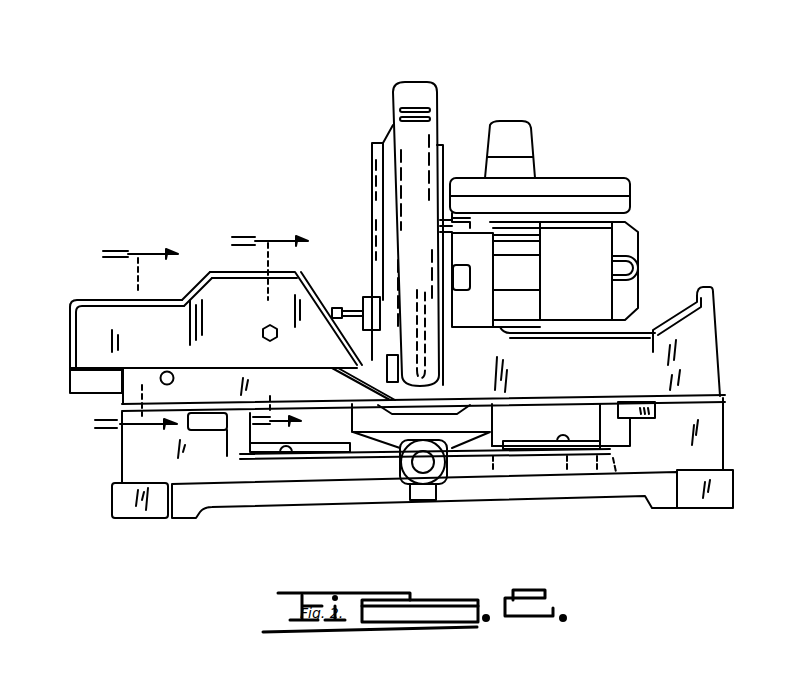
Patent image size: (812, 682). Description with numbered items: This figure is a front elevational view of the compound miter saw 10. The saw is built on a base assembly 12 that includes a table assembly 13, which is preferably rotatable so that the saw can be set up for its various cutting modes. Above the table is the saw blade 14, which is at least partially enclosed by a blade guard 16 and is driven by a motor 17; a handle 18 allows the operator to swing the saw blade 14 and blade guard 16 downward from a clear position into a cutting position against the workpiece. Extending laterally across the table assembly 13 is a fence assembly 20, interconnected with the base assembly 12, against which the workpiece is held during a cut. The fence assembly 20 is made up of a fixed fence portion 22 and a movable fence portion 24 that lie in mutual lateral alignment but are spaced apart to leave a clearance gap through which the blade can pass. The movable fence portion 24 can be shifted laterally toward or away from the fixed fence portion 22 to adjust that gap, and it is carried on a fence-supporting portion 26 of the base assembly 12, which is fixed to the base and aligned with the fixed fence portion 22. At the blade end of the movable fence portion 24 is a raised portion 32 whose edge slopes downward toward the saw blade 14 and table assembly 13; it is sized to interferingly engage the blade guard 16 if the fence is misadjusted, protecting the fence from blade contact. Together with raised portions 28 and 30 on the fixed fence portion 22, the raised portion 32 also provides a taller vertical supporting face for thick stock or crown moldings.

The compound miter saw 10 is at (50, 340).
The base assembly 12 is at (732, 416).
The table assembly 13 is at (560, 392).
The saw blade 14 is at (427, 345).
The blade guard 16 is at (428, 90).
The motor 17 is at (646, 236).
The handle 18 is at (600, 182).
The fence assembly 20 is at (112, 281).
The fixed fence portion 22 is at (652, 350).
The movable fence portion 24 is at (102, 328).
The fence-supporting portion 26 is at (128, 397).
The raised portion 28 is at (497, 331).
The raised portion 30 is at (711, 294).
The raised portion 32 is at (212, 292).